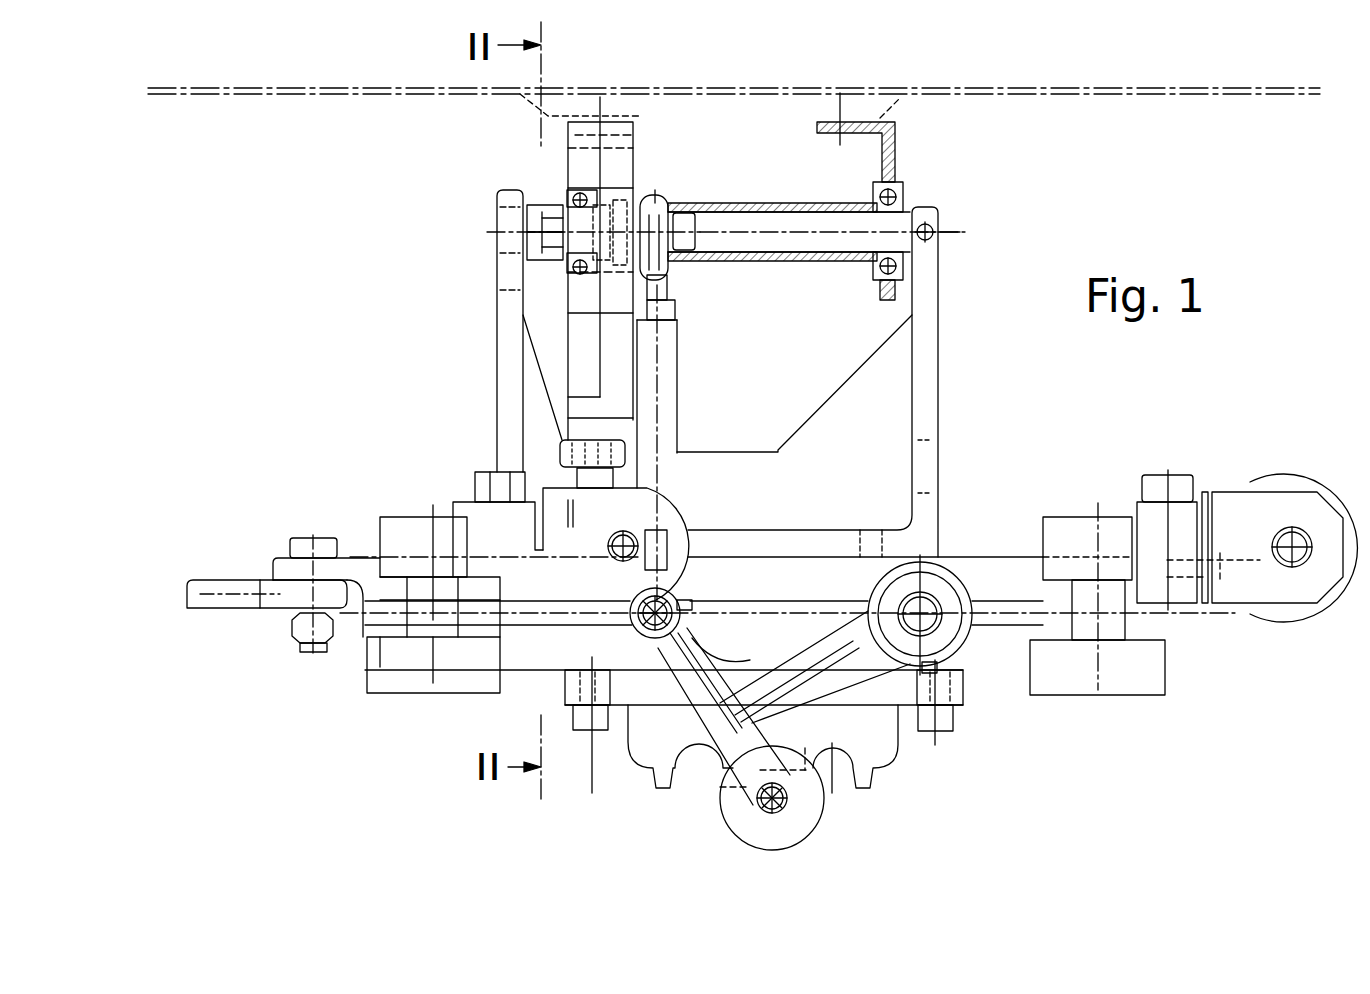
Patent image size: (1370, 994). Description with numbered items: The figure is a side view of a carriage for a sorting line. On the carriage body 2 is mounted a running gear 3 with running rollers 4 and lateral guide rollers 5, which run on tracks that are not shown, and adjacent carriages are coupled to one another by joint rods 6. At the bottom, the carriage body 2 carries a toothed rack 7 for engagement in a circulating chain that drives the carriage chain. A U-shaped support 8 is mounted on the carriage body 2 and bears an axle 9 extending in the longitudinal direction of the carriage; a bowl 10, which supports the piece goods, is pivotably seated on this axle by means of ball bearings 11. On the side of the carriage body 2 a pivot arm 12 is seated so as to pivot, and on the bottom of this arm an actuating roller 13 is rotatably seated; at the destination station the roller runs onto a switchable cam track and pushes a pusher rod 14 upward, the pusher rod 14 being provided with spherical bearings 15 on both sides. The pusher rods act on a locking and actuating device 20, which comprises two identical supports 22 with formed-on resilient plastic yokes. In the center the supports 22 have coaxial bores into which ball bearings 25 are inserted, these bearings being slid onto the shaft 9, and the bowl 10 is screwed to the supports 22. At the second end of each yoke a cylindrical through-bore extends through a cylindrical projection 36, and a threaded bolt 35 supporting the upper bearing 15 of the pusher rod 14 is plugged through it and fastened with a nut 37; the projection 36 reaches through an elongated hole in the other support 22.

The carriage body 2 is at (977, 572).
The running gear 3 is at (1258, 428).
The running rollers 4 is at (662, 495).
The lateral guide rollers 5 is at (1130, 668).
The joint rods 6 is at (199, 583).
The toothed rack 7 is at (880, 728).
The U-shaped support 8 is at (925, 378).
The axle 9 is at (748, 222).
The bowl 10 is at (977, 91).
The ball bearings 11 is at (896, 187).
The pivot arm 12 is at (703, 708).
The actuating roller 13 is at (807, 807).
The pusher rod 14 is at (668, 352).
The spherical bearings 15 is at (660, 218).
The locking and actuating device 20 is at (530, 295).
The supports 22 is at (620, 147).
The ball bearings 25 is at (570, 192).
The threaded bolt 35 is at (683, 237).
The cylindrical projection 36 is at (555, 222).
The nut 37 is at (550, 252).